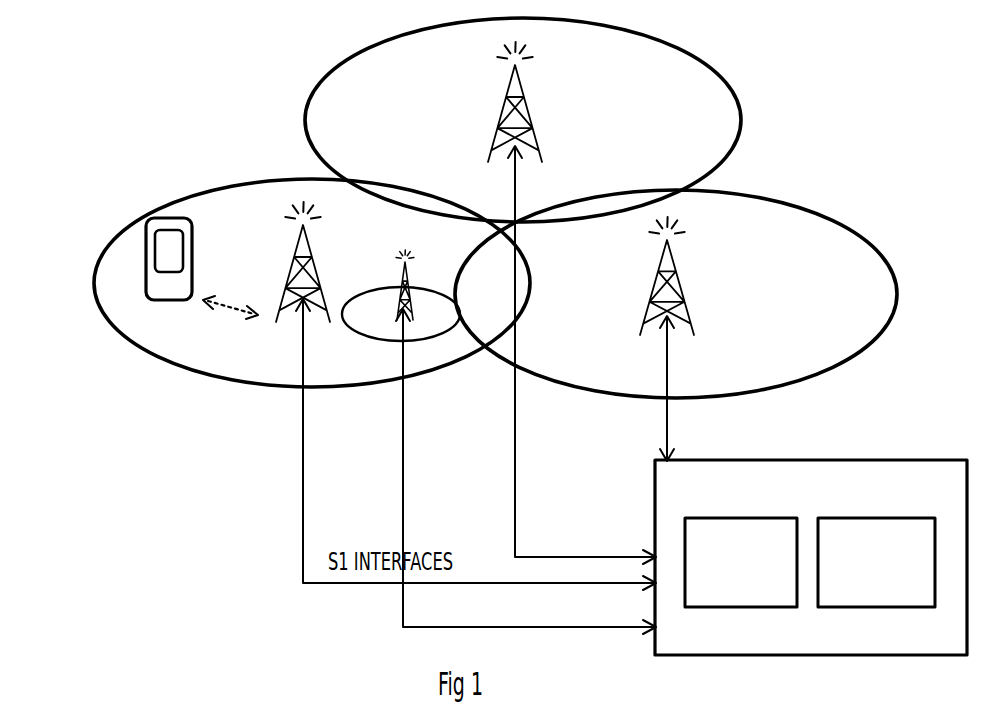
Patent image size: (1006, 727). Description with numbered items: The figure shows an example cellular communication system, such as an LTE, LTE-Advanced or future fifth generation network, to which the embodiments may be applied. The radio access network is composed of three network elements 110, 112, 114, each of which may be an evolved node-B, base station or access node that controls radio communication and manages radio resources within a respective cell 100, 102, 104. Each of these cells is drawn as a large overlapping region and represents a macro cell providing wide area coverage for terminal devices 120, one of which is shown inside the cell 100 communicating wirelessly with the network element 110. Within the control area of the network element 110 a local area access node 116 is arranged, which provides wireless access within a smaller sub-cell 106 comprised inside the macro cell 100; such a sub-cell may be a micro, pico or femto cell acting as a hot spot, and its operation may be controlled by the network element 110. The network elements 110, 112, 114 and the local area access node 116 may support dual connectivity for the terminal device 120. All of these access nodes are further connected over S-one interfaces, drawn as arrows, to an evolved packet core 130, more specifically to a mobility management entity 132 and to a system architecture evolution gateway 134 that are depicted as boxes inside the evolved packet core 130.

The cell 100 is at (250, 180).
The cell 102 is at (703, 70).
The cell 104 is at (860, 241).
The sub-cell 106 is at (358, 294).
The network element 110 is at (296, 256).
The network element 112 is at (508, 95).
The network element 114 is at (660, 272).
The local area access node 116 is at (402, 270).
The terminal device 120 is at (146, 247).
The evolved packet core 130 is at (811, 557).
The mobility management entity 132 is at (741, 562).
The system architecture evolution gateway 134 is at (876, 562).